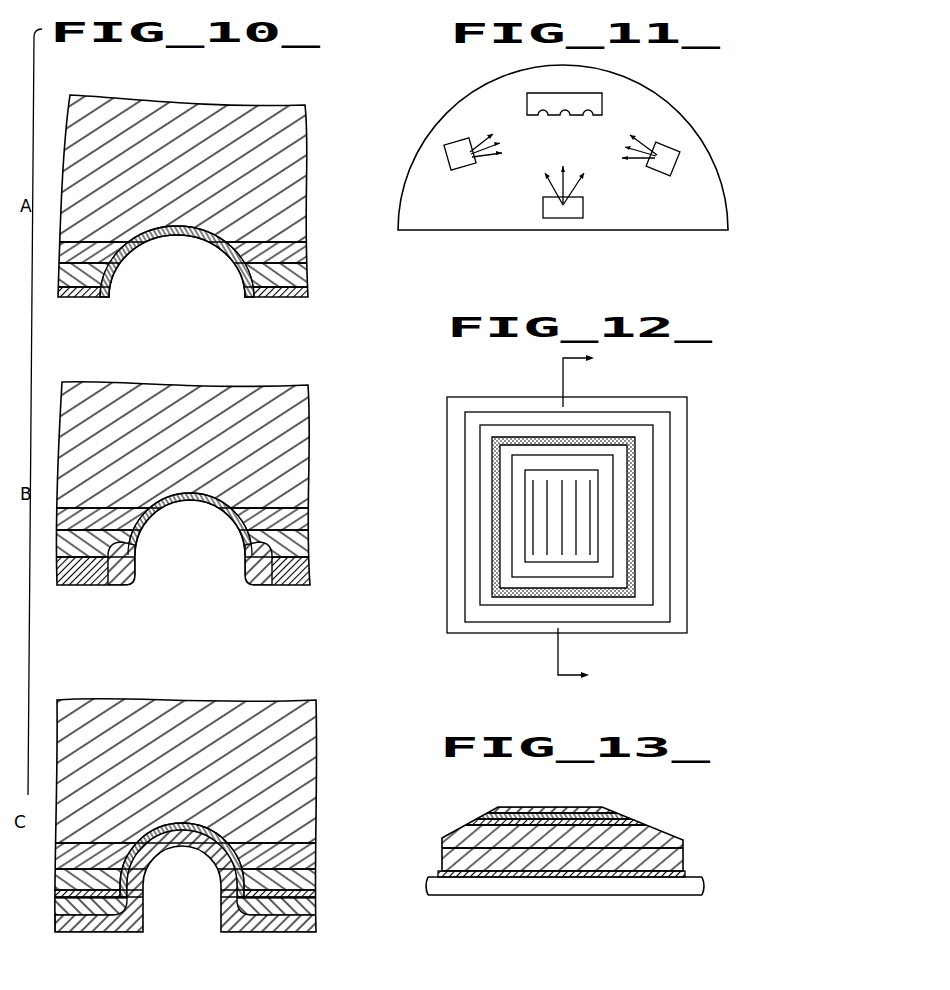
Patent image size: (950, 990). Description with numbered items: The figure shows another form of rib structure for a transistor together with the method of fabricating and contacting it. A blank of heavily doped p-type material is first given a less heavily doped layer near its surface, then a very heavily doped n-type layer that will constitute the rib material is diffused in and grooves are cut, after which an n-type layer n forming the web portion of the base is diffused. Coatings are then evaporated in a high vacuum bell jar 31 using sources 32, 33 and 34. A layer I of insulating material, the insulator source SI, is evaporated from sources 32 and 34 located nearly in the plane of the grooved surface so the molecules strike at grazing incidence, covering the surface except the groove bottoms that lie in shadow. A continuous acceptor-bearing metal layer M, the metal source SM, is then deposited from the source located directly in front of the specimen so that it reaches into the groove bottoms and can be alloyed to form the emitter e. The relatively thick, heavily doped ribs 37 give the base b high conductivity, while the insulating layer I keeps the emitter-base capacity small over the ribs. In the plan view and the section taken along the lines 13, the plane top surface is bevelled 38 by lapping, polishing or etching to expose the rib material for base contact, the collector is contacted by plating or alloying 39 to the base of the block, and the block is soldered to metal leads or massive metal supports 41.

In FIG. 10, the n-type layer n is at (264, 299).
In FIG. 10, the insulating layer I is at (131, 578).
In FIG. 12, the insulating layer I is at (606, 467).
In FIG. 13, the insulating layer I is at (603, 809).
In FIG. 10, the metal layer M is at (186, 841).
In FIG. 12, the metal layer M is at (583, 525).
In FIG. 13, the metal layer M is at (575, 807).
In FIG. 10, the ribs 37 is at (57, 879).
In FIG. 11, the high vacuum bell jar 31 is at (701, 139).
In FIG. 11, the source 32 is at (448, 167).
In FIG. 11, the source 33 is at (553, 214).
In FIG. 11, the source 34 is at (676, 165).
In FIG. 11, the insulator source SI is at (564, 180).
In FIG. 11, the metal source SM is at (605, 215).
In FIG. 12, the section line 13 is at (591, 518).
In FIG. 13, the bevelled top surface 38 is at (458, 826).
In FIG. 13, the collector contact plating or alloying 39 is at (614, 877).
In FIG. 13, the massive metal supports 41 is at (530, 884).
In FIG. 13, the base region b is at (478, 818).
In FIG. 13, the emitter region e is at (502, 810).